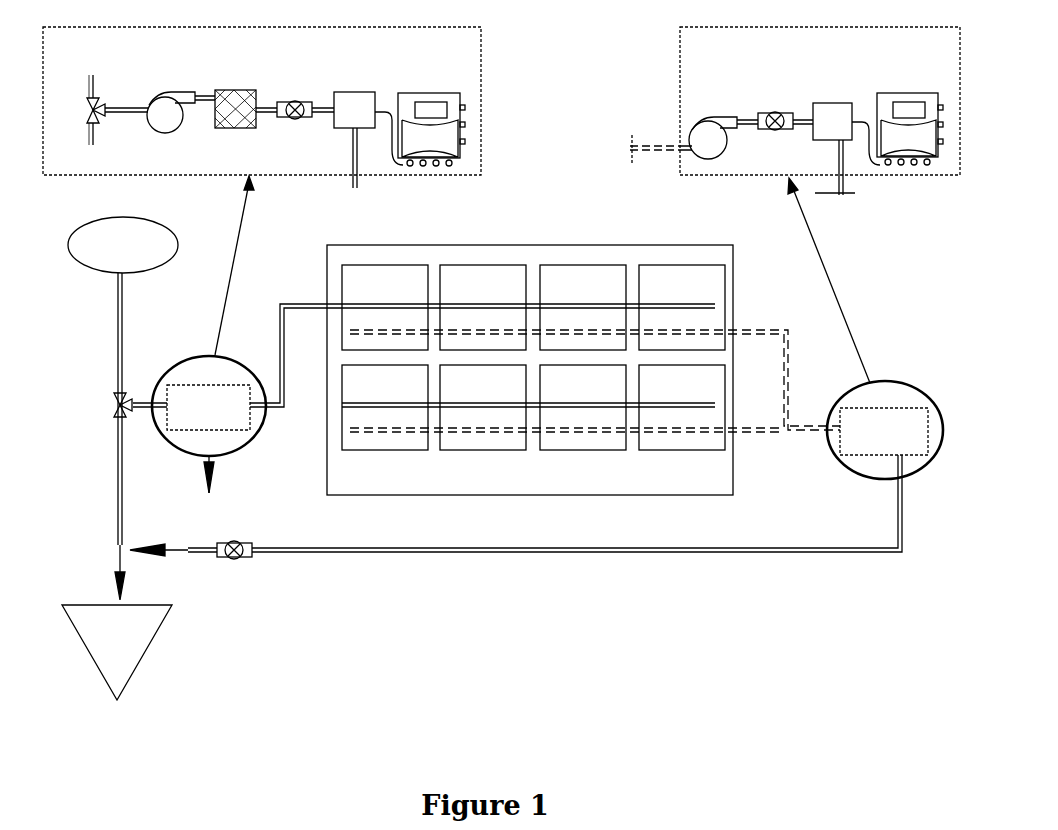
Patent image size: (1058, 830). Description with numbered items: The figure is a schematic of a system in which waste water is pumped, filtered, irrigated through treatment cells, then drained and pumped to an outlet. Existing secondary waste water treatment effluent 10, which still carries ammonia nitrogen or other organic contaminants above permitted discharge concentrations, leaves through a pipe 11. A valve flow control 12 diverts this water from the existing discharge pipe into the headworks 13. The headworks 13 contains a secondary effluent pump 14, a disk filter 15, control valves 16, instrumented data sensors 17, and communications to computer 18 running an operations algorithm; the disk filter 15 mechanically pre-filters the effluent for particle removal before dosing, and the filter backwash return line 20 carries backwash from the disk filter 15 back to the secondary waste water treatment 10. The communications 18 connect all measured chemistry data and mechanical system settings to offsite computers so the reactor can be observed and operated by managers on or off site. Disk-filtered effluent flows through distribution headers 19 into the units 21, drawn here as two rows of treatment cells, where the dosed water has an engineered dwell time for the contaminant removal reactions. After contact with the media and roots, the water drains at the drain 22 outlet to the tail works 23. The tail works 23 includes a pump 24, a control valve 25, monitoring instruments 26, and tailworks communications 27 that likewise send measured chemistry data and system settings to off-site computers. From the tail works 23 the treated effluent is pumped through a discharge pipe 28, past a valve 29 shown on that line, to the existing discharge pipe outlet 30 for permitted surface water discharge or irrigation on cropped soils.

The secondary waste water treatment effluent 10 is at (123, 245).
The pipe 11 is at (93, 128).
The valve flow control 12 is at (97, 97).
The headworks 13 is at (262, 235).
The secondary effluent pump 14 is at (165, 96).
The disk filter 15 is at (235, 90).
The control valves 16 is at (295, 101).
The instrumented data sensors 17 is at (353, 92).
The communications to computer 18 is at (420, 93).
The distribution headers 19 is at (360, 182).
The filter backwash return line 20 is at (205, 491).
The units 21 is at (530, 370).
The drain 22 is at (792, 372).
The tail works 23 is at (820, 247).
The pump 24 is at (706, 121).
The control valve 25 is at (775, 113).
The monitoring instruments 26 is at (832, 103).
The tailworks communications 27 is at (898, 93).
The discharge pipe 28 is at (845, 170).
The valve 29 is at (222, 557).
The existing discharge pipe outlet 30 is at (117, 551).